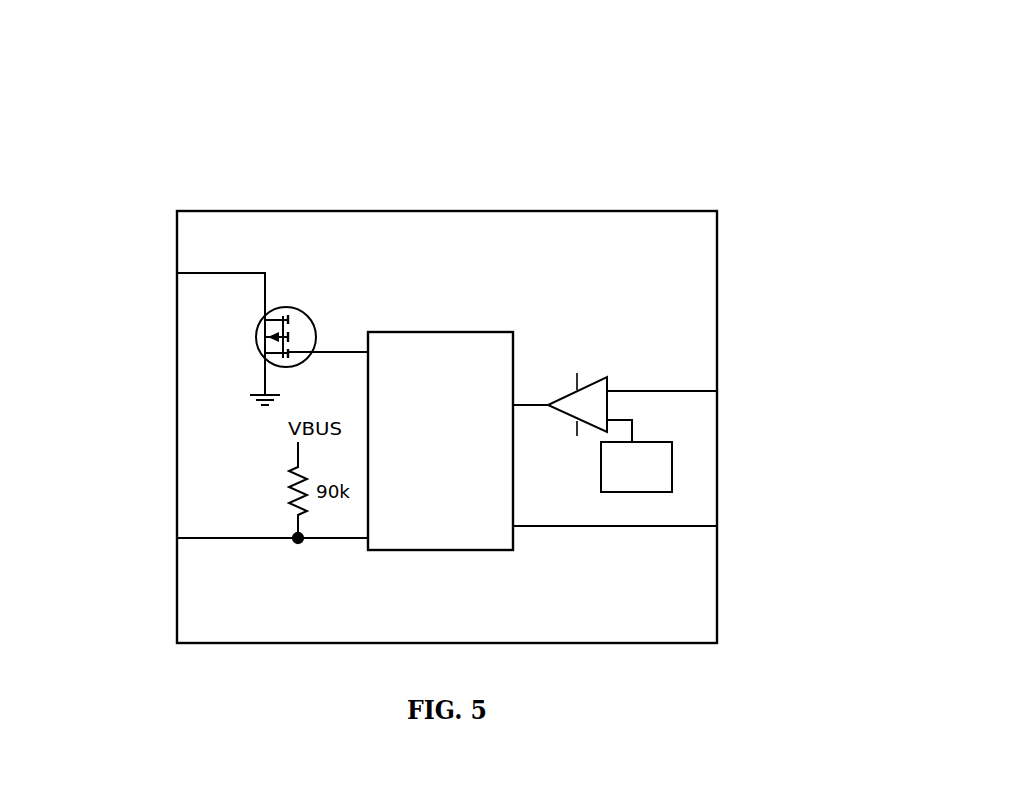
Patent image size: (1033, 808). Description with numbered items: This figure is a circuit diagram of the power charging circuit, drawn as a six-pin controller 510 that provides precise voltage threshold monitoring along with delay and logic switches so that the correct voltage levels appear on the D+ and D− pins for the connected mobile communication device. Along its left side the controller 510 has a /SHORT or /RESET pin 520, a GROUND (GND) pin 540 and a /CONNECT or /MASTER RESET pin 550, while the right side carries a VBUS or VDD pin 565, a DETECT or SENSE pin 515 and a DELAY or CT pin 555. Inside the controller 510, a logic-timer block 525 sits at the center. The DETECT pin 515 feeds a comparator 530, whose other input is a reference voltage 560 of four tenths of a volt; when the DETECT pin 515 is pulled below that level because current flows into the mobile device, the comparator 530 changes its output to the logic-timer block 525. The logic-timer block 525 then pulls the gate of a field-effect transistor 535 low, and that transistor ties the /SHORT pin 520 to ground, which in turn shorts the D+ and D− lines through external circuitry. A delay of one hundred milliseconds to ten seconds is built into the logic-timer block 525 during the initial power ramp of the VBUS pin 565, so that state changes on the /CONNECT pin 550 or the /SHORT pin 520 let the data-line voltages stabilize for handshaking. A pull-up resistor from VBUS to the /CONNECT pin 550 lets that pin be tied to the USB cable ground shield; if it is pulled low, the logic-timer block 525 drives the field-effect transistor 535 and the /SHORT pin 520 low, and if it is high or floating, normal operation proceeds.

The controller 510 is at (730, 156).
The DETECT pin 515 is at (757, 393).
The /SHORT pin 520 is at (133, 286).
The logic-timer block 525 is at (392, 303).
The comparator 530 is at (601, 348).
The field-effect transistor 535 is at (287, 280).
The GROUND pin 540 is at (133, 411).
The /CONNECT pin 550 is at (133, 549).
The DELAY pin 555 is at (757, 530).
The reference voltage 560 is at (695, 460).
The VBUS pin 565 is at (755, 287).